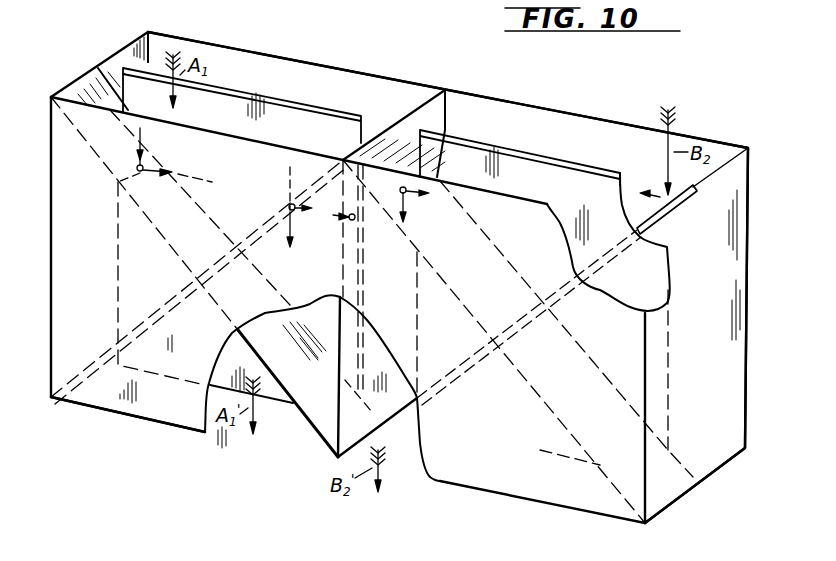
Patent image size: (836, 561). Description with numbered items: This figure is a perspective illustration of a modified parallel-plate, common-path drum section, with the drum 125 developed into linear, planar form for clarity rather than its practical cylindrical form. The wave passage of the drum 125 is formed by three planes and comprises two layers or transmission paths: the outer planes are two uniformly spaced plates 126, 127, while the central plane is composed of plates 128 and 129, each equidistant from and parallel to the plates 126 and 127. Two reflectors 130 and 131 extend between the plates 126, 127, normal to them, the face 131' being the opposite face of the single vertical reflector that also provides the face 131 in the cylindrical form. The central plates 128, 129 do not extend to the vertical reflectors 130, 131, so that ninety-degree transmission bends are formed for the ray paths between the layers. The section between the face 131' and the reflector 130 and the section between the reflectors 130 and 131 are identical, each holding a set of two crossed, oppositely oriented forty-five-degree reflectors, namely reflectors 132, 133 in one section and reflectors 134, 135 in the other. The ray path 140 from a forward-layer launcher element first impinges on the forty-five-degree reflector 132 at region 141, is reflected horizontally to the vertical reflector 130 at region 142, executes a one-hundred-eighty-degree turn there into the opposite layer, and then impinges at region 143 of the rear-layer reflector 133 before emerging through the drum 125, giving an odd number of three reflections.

The drum 125 is at (138, 425).
The outer plate 126 is at (206, 122).
The outer plate 127 is at (258, 62).
The central plate 128 is at (340, 103).
The central plate 129 is at (577, 182).
The vertical reflector 130 is at (432, 117).
The vertical reflector 131 is at (723, 335).
The vertical reflector face 131' is at (108, 42).
The 45-degree reflector 132 is at (92, 92).
The 45-degree reflector 133 is at (147, 318).
The 45-degree reflector 134 is at (340, 152).
The 45-degree reflector 135 is at (672, 219).
The ray path 140 is at (137, 136).
The region 141 is at (141, 175).
The region 142 is at (366, 233).
The region 143 is at (284, 207).